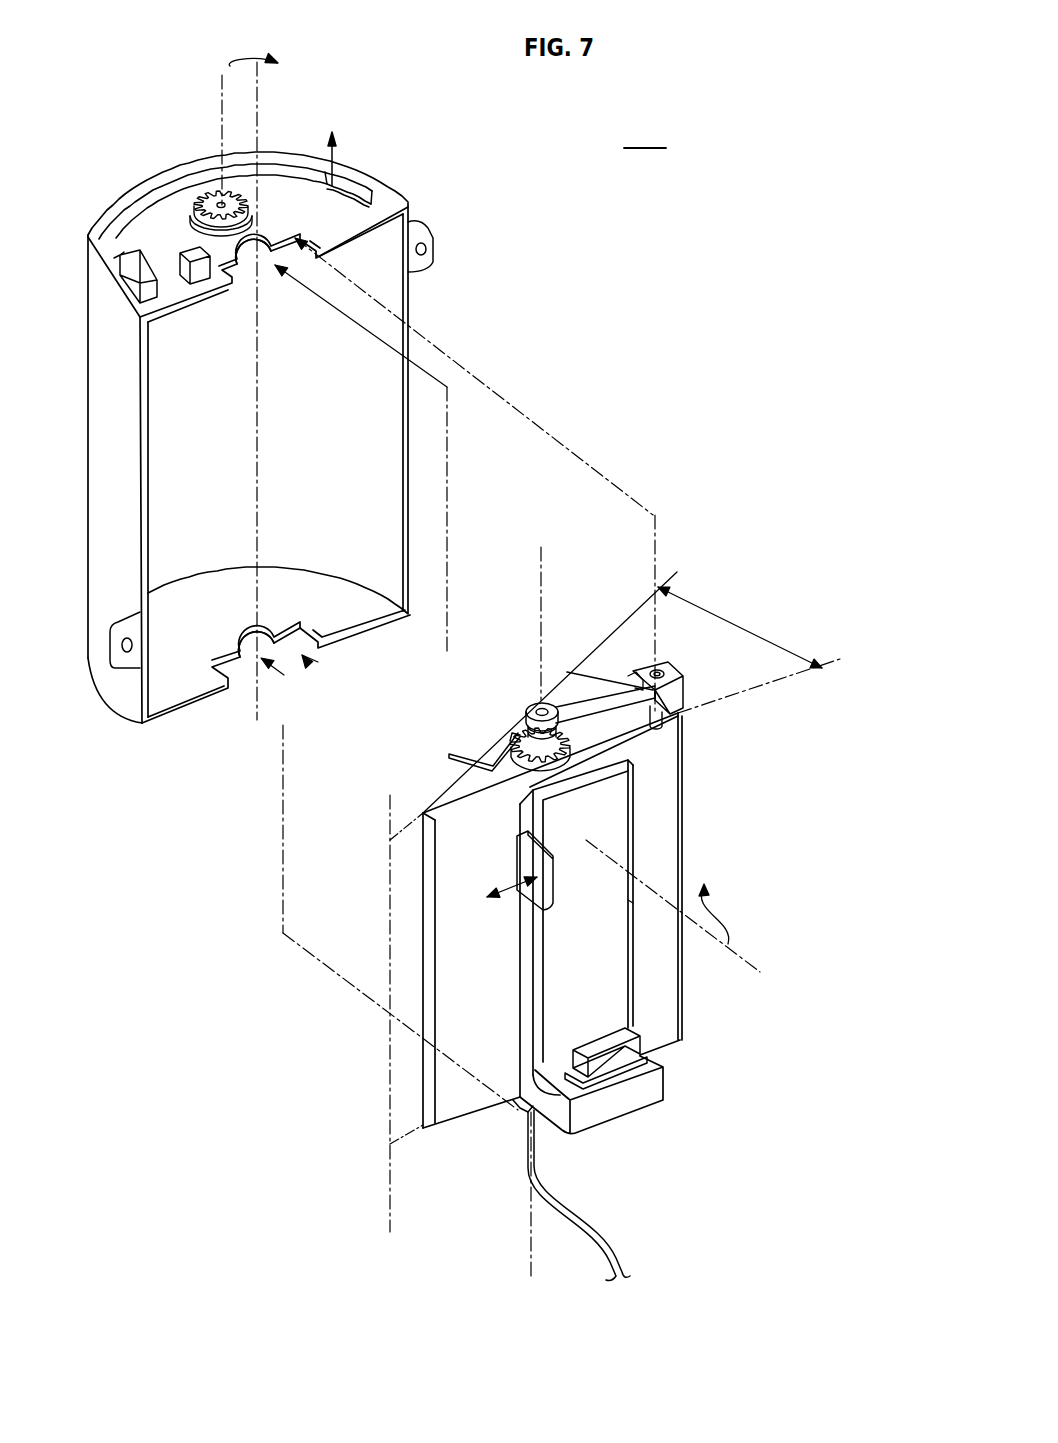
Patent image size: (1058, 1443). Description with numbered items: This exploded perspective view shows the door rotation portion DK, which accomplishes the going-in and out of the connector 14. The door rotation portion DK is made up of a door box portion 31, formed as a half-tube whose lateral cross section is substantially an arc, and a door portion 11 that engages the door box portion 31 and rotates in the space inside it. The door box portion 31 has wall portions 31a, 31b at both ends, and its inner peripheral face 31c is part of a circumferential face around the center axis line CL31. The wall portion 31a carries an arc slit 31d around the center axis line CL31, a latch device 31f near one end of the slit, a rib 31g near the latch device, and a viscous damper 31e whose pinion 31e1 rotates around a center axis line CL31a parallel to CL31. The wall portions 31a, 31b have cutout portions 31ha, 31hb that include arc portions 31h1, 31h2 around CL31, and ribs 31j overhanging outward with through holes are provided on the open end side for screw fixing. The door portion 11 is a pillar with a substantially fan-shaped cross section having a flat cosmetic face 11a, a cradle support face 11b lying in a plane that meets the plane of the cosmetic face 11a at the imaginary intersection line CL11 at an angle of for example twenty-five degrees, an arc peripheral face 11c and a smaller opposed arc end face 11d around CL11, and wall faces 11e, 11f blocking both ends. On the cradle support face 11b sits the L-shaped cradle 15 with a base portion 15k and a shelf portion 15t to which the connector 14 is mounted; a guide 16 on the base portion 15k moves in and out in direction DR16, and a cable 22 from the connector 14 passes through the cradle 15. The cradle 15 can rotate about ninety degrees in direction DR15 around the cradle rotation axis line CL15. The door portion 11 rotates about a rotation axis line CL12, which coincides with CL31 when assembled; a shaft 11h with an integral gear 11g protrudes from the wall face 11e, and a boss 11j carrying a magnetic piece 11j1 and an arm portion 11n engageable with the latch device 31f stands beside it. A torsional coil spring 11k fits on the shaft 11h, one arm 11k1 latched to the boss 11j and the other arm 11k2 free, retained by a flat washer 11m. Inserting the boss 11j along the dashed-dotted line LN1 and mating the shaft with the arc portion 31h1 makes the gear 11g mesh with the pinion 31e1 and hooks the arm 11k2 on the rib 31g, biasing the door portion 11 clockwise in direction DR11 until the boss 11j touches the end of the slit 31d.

The door box portion 31 is at (387, 185).
The wall portion 31a is at (177, 208).
The wall portion 31b is at (173, 678).
The inner peripheral face 31c is at (386, 524).
The arc slit 31d is at (338, 184).
The viscous damper 31e is at (187, 231).
The pinion 31e1 is at (212, 196).
The latch device 31f is at (127, 280).
The rib 31g is at (200, 271).
The arc portion 31h1 is at (261, 238).
The arc portion 31h2 is at (262, 637).
The cutout portion 31ha is at (297, 284).
The cutout portion 31hb is at (318, 662).
The rib 31j is at (437, 250).
The door portion 11 is at (778, 590).
The cosmetic face 11a is at (453, 771).
The cradle support face 11b is at (658, 798).
The peripheral face 11c is at (592, 652).
The end face 11d is at (427, 933).
The wall face 11e is at (588, 609).
The wall face 11f is at (460, 1128).
The gear 11g is at (573, 748).
The shaft 11h is at (567, 700).
The boss 11j is at (665, 724).
The magnetic piece 11j1 is at (665, 706).
The torsional coil spring 11k is at (528, 703).
The arm 11k1 is at (608, 702).
The arm 11k2 is at (478, 753).
The flat washer 11m is at (527, 721).
The arm portion 11n is at (664, 676).
The connector 14 is at (618, 1026).
The cradle 15 is at (634, 828).
The base portion 15k is at (620, 984).
The shelf portion 15t is at (654, 1062).
The guide 16 is at (550, 911).
The cable 22 is at (604, 1244).
The imaginary intersection line CL11 is at (388, 1198).
The rotation axis line CL12 is at (534, 1212).
The cradle rotation axis line CL15 is at (722, 944).
The center axis line CL31 is at (260, 104).
The center axis line CL31a is at (222, 122).
The direction DR11 is at (262, 47).
The direction DR15 is at (713, 899).
The direction DR16 is at (490, 878).
The dashed-dotted line LN1 is at (523, 414).
The door rotation portion DK is at (645, 135).